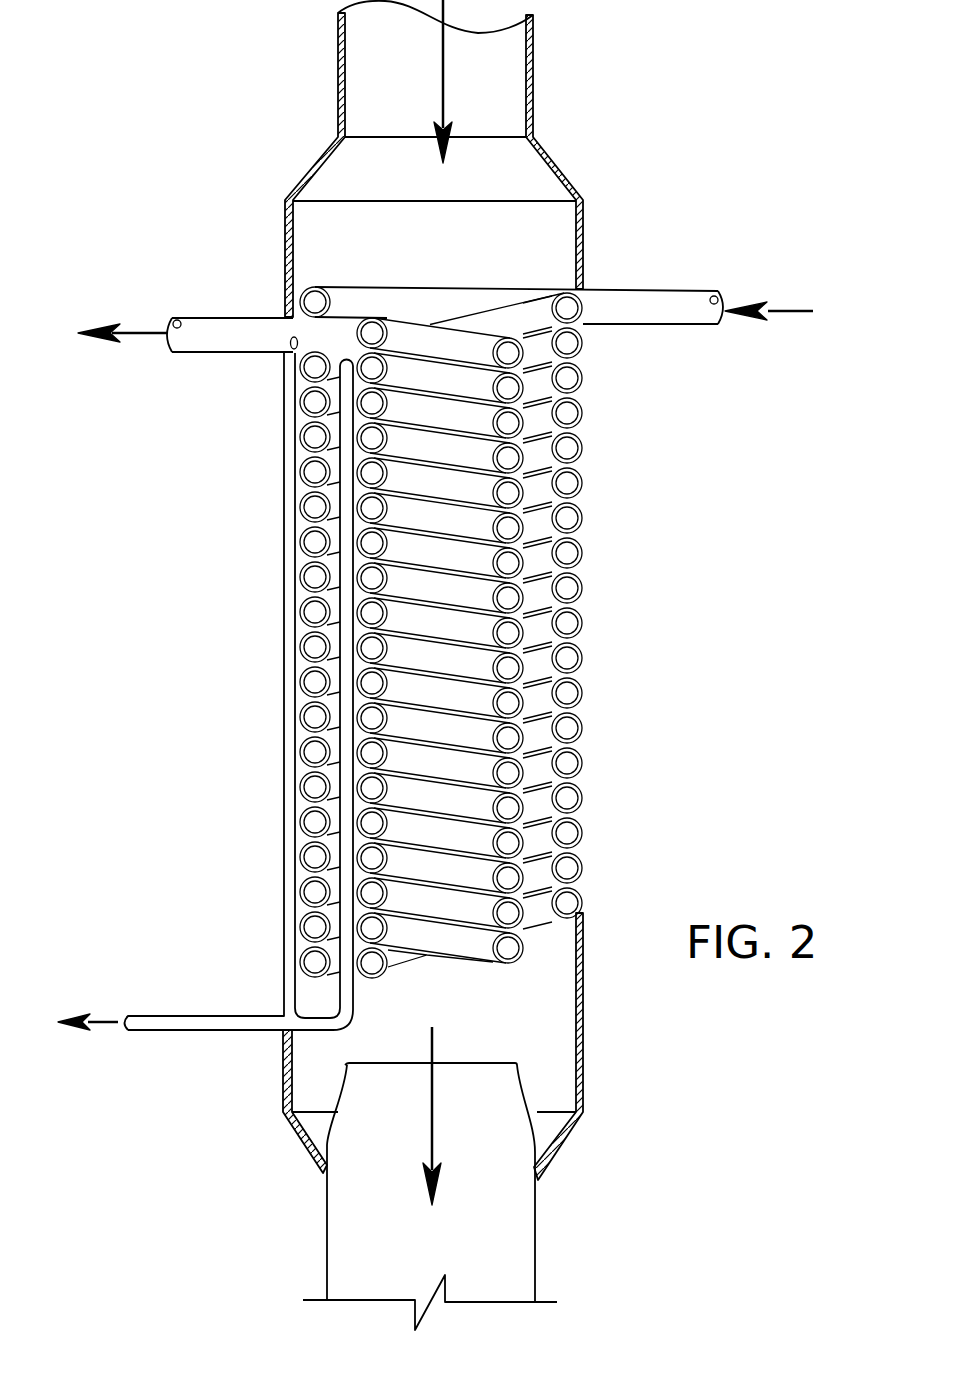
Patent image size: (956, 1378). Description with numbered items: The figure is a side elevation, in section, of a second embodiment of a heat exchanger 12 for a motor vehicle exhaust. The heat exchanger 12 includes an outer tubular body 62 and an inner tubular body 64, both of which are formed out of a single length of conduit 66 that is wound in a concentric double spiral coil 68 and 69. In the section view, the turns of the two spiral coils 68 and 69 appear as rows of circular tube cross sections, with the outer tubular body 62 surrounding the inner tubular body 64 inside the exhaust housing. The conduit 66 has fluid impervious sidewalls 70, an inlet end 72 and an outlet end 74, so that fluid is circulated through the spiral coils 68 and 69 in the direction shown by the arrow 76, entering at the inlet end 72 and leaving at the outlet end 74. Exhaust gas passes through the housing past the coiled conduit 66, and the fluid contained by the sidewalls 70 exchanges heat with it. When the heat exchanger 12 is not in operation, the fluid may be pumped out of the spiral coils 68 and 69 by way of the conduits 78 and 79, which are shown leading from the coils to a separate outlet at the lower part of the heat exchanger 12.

The heat exchanger 12 is at (244, 153).
The outlet end 74 is at (227, 333).
The inlet end 72 is at (640, 305).
The fluid impervious sidewalls 70 is at (647, 325).
The arrow 76 is at (800, 310).
The conduit 78 is at (347, 610).
The conduit 79 is at (290, 668).
The outer tubular body 62 is at (586, 638).
The spiral coil 68 is at (569, 697).
The spiral coil 69 is at (511, 776).
The conduit 66 is at (588, 813).
The inner tubular body 64 is at (531, 967).